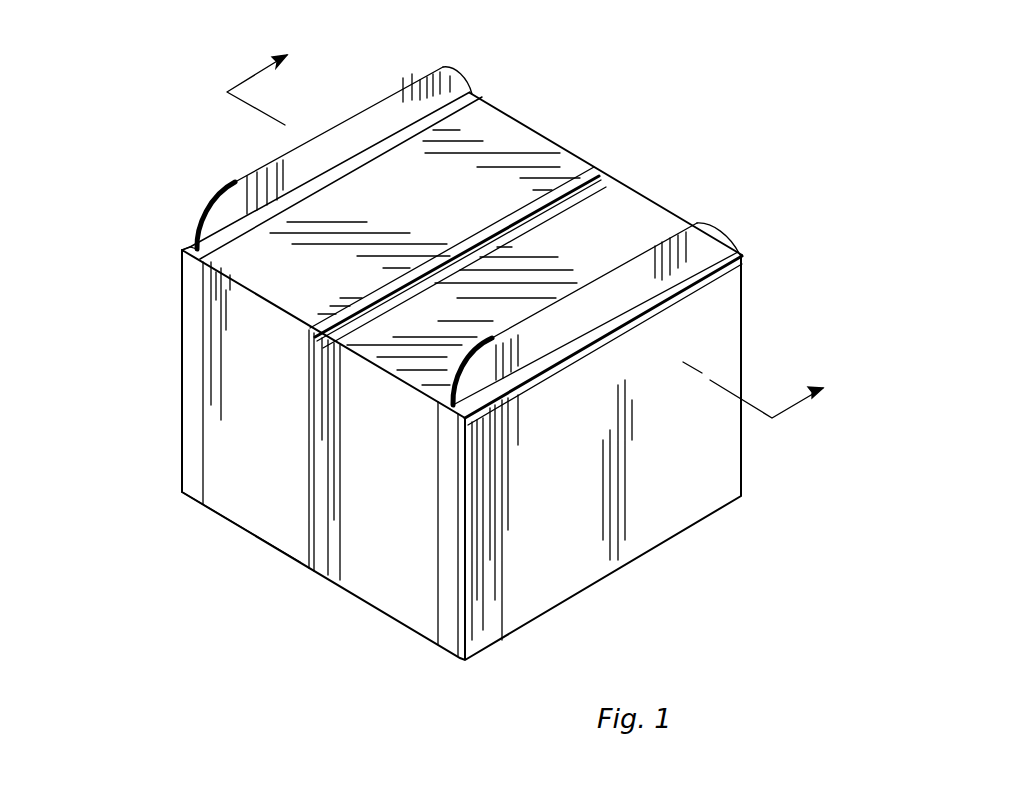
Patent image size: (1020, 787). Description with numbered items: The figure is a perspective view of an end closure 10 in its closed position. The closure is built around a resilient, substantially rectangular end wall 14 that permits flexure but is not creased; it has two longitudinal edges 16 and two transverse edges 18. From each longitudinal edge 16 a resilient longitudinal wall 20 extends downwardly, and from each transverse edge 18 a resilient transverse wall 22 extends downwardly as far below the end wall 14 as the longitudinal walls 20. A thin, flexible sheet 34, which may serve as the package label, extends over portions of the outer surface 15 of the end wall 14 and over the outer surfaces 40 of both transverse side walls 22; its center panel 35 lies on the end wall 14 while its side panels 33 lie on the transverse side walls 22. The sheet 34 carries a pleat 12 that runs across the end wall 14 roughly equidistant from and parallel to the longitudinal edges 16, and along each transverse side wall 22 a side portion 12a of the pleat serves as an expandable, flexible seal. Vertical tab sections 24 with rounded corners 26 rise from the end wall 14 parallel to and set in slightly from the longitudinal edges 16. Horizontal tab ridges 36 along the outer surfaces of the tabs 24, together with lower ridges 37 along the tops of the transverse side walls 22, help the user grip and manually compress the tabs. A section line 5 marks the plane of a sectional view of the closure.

The section line 5- 5 is at (539, 223).
The end closure 10 is at (152, 378).
The pleat 12 is at (595, 165).
The side portion of the pleat 12a is at (317, 532).
The end wall 14 is at (470, 100).
The outer surface of the end wall 15 is at (187, 242).
The longitudinal edges 16 is at (192, 245).
The transverse edges 18 is at (213, 290).
The longitudinal wall 20 is at (718, 462).
The transverse wall 22 is at (190, 330).
The vertical tab sections 24 is at (363, 95).
The rounded corners 26 is at (455, 72).
The side panels 33 is at (260, 520).
The flexible sheet 34 is at (395, 530).
The center panel 35 is at (513, 137).
The tab ridges 36 is at (670, 233).
The lower ridges 37 is at (707, 285).
The outer surfaces of the transverse side walls 40 is at (192, 458).